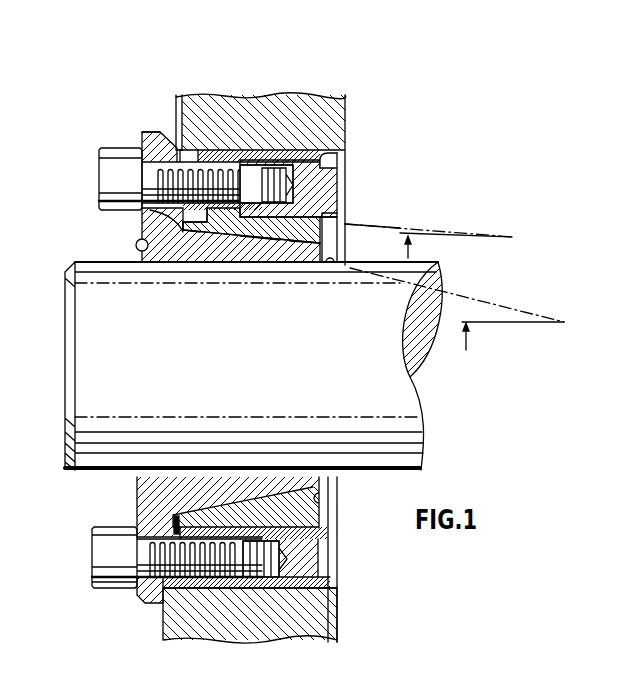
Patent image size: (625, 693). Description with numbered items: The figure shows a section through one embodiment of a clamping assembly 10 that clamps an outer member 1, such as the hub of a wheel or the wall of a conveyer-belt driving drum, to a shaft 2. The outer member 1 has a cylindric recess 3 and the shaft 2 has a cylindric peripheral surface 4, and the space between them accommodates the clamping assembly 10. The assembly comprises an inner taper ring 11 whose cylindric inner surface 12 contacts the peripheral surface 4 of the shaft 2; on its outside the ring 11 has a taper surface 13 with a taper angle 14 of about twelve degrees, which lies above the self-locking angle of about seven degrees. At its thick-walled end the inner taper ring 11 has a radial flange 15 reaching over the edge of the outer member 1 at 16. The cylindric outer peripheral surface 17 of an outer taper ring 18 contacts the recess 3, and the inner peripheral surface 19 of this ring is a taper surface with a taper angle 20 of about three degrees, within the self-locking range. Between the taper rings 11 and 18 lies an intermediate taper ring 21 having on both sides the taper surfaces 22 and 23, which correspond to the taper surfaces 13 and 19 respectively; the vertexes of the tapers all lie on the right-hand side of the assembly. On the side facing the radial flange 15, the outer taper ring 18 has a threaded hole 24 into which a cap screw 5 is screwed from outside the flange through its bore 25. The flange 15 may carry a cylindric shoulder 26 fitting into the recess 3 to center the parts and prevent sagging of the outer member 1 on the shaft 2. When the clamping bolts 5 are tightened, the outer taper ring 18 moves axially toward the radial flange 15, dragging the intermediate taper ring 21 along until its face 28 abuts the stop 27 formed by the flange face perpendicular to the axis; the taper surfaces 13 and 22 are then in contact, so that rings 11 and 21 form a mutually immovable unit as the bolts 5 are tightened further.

The outer member 1 is at (330, 121).
The shaft 2 is at (87, 310).
The cylindric recess 3 is at (344, 160).
The cylindric peripheral surface 4 is at (332, 266).
The cap screw 5 is at (102, 201).
The clamping assembly 10 is at (392, 178).
The inner taper ring 11 is at (157, 250).
The cylindric inner surface 12 is at (190, 250).
The taper surface 13 is at (308, 250).
The taper angle 14 is at (466, 300).
The radial flange 15 is at (143, 137).
The edge of the outer member 16 is at (167, 143).
The cylindric outer peripheral surface 17 is at (338, 180).
The outer taper ring 18 is at (338, 214).
The inner peripheral surface 19 is at (330, 235).
The taper angle 20 is at (412, 224).
The intermediate taper ring 21 is at (347, 250).
The taper surface 22 is at (265, 250).
The taper surface 23 is at (340, 209).
The threaded hole 24 is at (272, 162).
The bore 25 is at (138, 214).
The cylindric shoulder 26 is at (179, 100).
The stop 27 is at (148, 231).
The face 28 is at (202, 250).